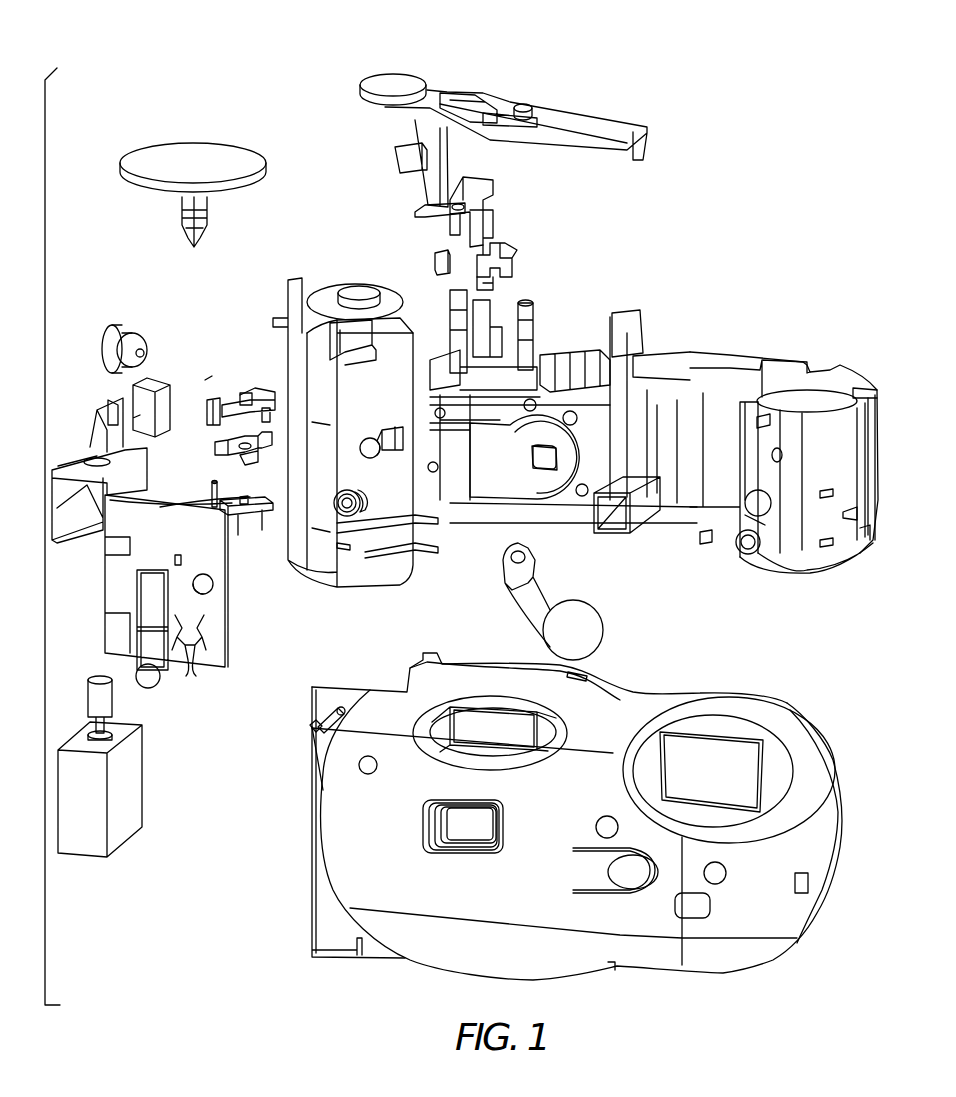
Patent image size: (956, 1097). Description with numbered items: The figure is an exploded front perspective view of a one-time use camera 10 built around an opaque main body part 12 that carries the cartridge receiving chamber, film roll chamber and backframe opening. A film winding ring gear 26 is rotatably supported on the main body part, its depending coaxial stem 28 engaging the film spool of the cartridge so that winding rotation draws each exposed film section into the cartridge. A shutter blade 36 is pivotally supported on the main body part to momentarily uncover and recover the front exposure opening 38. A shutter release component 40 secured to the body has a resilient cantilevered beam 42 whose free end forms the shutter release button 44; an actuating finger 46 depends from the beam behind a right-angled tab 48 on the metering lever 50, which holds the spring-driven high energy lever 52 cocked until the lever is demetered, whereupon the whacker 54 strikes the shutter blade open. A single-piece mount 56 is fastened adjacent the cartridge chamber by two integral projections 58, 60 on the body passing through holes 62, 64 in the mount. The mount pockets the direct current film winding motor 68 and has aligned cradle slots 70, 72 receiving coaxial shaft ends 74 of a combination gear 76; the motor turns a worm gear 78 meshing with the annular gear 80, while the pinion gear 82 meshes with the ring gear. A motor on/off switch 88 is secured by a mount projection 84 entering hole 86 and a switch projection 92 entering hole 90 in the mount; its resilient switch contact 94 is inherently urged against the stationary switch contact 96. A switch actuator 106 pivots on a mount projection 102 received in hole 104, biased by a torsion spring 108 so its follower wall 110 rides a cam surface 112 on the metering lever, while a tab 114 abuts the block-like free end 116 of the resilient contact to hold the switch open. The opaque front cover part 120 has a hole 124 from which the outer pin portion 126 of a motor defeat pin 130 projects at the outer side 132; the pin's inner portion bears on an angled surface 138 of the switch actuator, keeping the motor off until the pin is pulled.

The one-time use camera 10 is at (717, 81).
The main body part 12 is at (840, 364).
The film winding ring gear 26 is at (125, 158).
The coaxial stem 28 is at (180, 227).
The shutter blade 36 is at (602, 617).
The front exposure opening 38 is at (530, 463).
The shutter release component 40 is at (448, 58).
The resilient cantilevered beam 42 is at (460, 98).
The shutter release button 44 is at (392, 75).
The actuating finger 46 is at (425, 138).
The right-angled tab 48 is at (432, 258).
The metering lever 50 is at (485, 208).
The high energy lever 52 is at (500, 256).
The whacker 54 is at (494, 285).
The single-piece mount 56 is at (80, 513).
The integral projection 58 is at (370, 438).
The integral projection 60 is at (354, 494).
The hole 62 is at (214, 583).
The hole 64 is at (187, 645).
The film winding motor 68 is at (137, 765).
The cradle slot 70 is at (108, 400).
The cradle slot 72 is at (148, 428).
The coaxial shaft end 74 is at (144, 352).
The combination gear 76 is at (95, 329).
The worm gear 78 is at (115, 697).
The annular gear 80 is at (119, 333).
The pinion gear 82 is at (128, 345).
The integral projection 84 is at (260, 515).
The hole 86 is at (231, 490).
The motor on/off switch 88 is at (277, 470).
The hole 90 is at (222, 508).
The projection 92 is at (238, 458).
The resilient switch contact 94 is at (240, 436).
The stationary switch contact 96 is at (262, 470).
The integral projection 102 is at (200, 501).
The hole 104 is at (218, 397).
The switch actuator 106 is at (293, 396).
The torsion spring 108 is at (214, 371).
The follower wall 110 is at (245, 392).
The cam surface 112 is at (412, 210).
The tab 114 is at (272, 410).
The block-like free end 116 is at (262, 448).
The front cover part 120 is at (412, 950).
The hole 124 is at (330, 687).
The outer pin portion 126 is at (323, 727).
The motor defeat pin 130 is at (303, 742).
The outer side 132 is at (388, 869).
The angled surface 138 is at (232, 393).